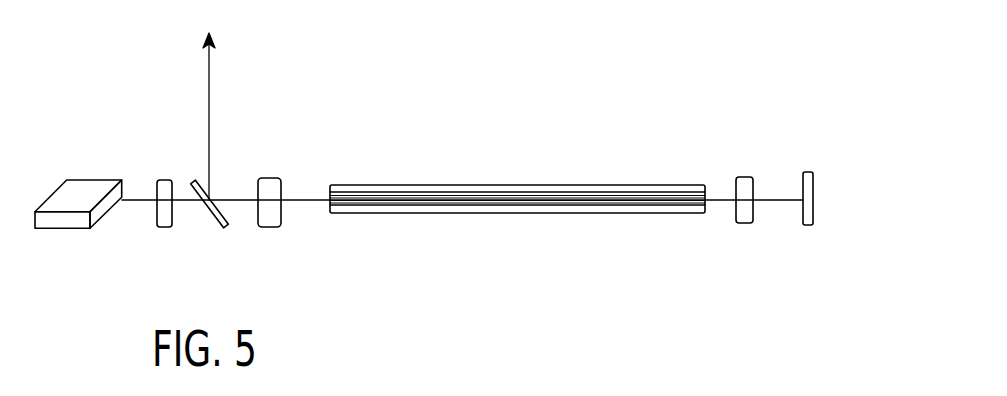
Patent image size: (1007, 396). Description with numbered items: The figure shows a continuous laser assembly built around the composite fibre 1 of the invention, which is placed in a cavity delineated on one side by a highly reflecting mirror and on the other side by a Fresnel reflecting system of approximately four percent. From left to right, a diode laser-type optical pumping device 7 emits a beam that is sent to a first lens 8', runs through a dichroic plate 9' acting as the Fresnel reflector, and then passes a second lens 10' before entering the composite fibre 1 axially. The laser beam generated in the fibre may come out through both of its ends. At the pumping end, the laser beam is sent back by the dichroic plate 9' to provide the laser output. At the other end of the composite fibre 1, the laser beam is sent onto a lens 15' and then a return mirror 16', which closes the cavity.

The composite fibre 1 is at (559, 176).
The diode laser-type optical pumping device 7 is at (82, 190).
The first lens 8' is at (142, 231).
The dichroic plate 9' is at (203, 231).
The second lens 10' is at (295, 230).
The lens 15' is at (726, 237).
The return mirror 16' is at (792, 234).